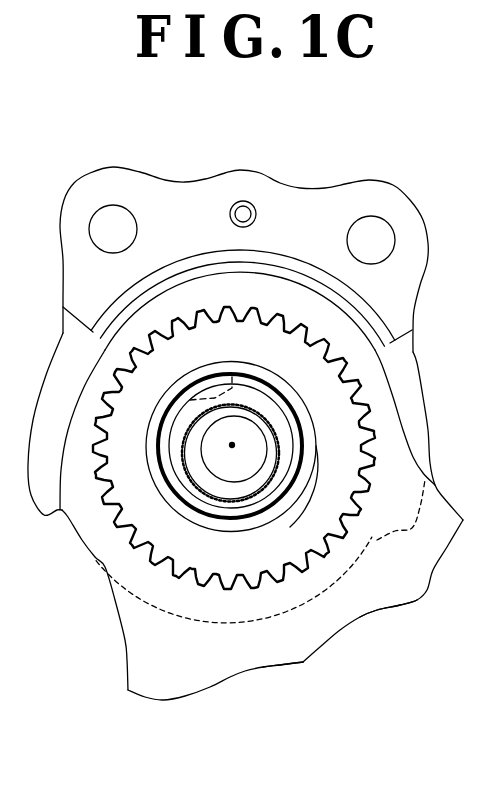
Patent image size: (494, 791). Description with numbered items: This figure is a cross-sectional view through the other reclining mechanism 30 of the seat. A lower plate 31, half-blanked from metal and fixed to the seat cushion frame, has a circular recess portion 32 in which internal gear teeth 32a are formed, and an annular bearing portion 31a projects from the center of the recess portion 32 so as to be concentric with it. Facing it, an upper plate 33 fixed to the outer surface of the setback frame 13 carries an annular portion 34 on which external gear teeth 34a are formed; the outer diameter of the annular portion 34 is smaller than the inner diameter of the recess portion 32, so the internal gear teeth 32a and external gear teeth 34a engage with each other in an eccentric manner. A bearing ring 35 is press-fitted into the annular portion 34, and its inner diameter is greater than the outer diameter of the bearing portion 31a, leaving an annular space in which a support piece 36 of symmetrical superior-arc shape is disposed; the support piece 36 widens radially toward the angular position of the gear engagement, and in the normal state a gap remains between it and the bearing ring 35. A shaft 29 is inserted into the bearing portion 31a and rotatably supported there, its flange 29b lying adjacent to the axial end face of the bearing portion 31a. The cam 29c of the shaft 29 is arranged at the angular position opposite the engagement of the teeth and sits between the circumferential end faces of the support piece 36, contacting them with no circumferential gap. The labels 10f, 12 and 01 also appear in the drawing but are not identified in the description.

The setback frame 13 is at (420, 217).
The upper plate 33 is at (62, 332).
The reclining mechanism 30 is at (388, 376).
The housing outer wall 10f is at (31, 420).
The lower plate 31 is at (130, 672).
The recess portion 32 is at (263, 642).
The internal gear teeth 32a is at (283, 664).
The annular portion 34 is at (347, 552).
The external gear teeth 34a is at (388, 608).
The support piece 36 is at (182, 413).
The bearing ring 35 is at (248, 373).
The eccentric ring 12 is at (232, 445).
The shaft 29 is at (256, 426).
The flange 29b is at (283, 434).
The cam 29c is at (202, 493).
The center axis 01 is at (232, 445).
The bearing portion 31a is at (340, 548).